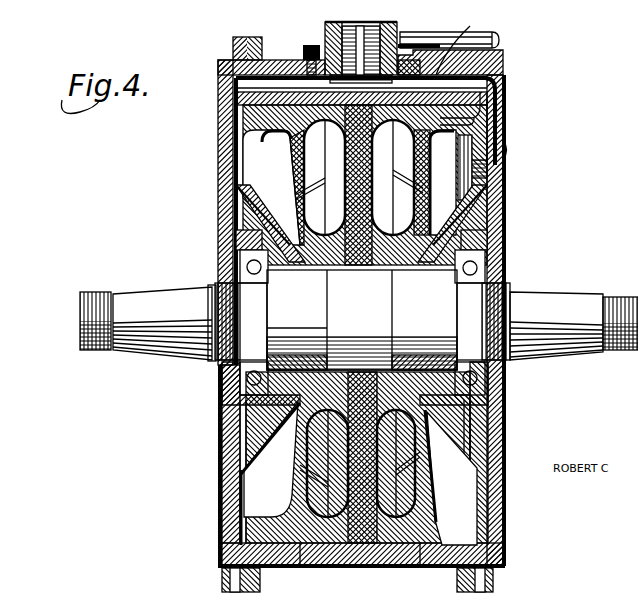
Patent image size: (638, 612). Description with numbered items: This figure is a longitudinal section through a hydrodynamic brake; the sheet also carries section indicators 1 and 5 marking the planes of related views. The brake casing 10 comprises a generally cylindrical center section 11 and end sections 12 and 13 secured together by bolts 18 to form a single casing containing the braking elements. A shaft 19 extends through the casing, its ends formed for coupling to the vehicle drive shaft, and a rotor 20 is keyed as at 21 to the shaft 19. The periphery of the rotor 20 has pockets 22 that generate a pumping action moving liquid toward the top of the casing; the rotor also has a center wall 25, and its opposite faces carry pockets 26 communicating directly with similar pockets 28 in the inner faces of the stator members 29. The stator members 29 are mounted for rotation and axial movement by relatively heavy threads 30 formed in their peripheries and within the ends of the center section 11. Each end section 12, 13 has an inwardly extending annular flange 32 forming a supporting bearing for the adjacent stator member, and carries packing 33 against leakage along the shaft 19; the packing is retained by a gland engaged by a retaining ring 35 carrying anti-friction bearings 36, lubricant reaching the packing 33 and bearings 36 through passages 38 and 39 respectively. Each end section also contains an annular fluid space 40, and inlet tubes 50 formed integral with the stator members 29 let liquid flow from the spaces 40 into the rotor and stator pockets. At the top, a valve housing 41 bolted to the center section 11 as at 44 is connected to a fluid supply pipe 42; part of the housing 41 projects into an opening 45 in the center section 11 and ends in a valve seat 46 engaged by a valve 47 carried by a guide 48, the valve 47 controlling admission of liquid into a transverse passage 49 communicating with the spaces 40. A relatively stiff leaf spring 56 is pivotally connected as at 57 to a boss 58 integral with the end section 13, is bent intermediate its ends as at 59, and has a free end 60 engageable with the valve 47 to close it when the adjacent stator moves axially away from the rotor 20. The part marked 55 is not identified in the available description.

The section line 1 is at (262, 15).
The section line 5 is at (348, 10).
The brake casing 10 is at (212, 142).
The center section 11 is at (358, 566).
The end section 12 is at (219, 490).
The end section 13 is at (498, 490).
The bolts 18 is at (222, 586).
The shaft 19 is at (158, 352).
The rotor 20 is at (362, 320).
The key 21 is at (358, 350).
The pockets 22 is at (346, 125).
The center wall 25 is at (362, 486).
The pockets 26 is at (304, 450).
The pockets 28 is at (300, 170).
The stator members 29 is at (283, 133).
The threads 30 is at (322, 566).
The annular flange 32 is at (295, 360).
The packing 33 is at (302, 270).
The retaining ring 35 is at (219, 408).
The anti-friction bearings 36 is at (254, 283).
The passages 38 is at (232, 201).
The passages 39 is at (232, 245).
The fluid space 40 is at (238, 540).
The valve housing 41 is at (324, 31).
The fluid supply pipe 42 is at (492, 32).
The bolts 44 is at (274, 36).
The opening 45 is at (326, 24).
The valve seat 46 is at (303, 50).
The valve 47 is at (325, 80).
The guide 48 is at (380, 44).
The transverse passage 49 is at (455, 43).
The inlet tubes 50 is at (320, 180).
The conduit 55 is at (262, 103).
The leaf spring 56 is at (476, 118).
The pivotal connection 57 is at (507, 155).
The boss 58 is at (490, 176).
The bend 59 is at (496, 85).
The free end 60 is at (382, 128).